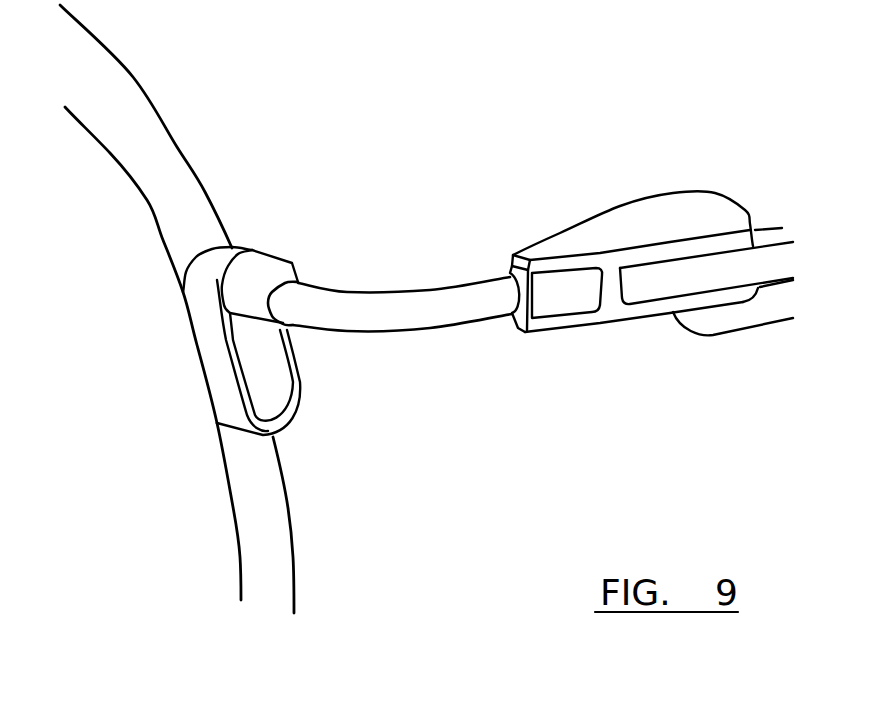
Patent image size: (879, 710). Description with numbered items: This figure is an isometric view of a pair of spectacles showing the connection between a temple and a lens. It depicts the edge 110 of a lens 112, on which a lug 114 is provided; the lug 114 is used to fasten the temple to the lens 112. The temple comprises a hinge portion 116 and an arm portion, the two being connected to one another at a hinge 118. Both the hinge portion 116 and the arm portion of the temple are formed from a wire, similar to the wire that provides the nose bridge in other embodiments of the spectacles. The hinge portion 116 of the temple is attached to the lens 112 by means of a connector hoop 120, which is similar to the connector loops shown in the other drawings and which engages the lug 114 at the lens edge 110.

The edge 110 is at (155, 163).
The lens 112 is at (112, 516).
The lug 114 is at (268, 378).
The hinge portion 116 is at (403, 307).
The hinge 118 is at (653, 194).
The connector hoop 120 is at (218, 263).